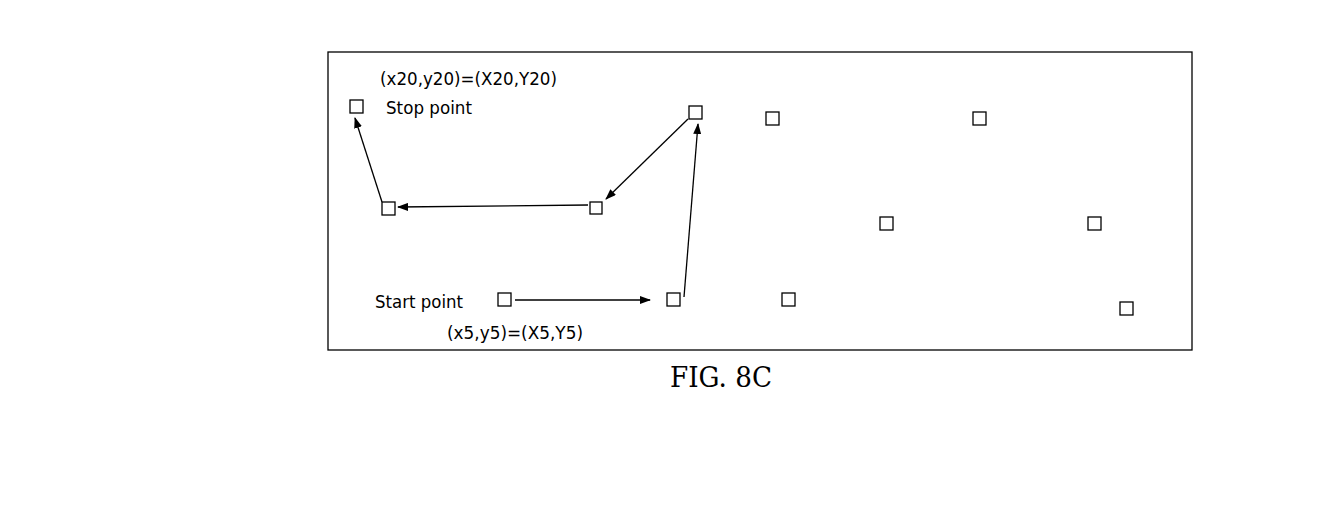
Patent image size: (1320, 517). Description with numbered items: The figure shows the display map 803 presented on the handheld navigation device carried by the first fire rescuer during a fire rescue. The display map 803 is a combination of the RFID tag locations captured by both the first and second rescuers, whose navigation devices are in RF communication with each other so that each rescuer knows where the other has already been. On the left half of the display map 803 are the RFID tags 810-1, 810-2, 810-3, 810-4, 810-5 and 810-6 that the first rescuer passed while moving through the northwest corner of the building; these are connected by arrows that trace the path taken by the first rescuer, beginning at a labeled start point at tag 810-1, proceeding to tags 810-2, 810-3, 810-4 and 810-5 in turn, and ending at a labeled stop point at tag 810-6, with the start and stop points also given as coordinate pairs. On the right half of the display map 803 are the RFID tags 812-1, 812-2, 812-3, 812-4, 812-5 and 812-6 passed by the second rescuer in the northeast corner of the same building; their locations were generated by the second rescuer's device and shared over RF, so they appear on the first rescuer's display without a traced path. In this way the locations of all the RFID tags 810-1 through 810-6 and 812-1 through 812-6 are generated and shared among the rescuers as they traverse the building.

The display map 803 is at (1209, 54).
The RFID tag 810-1 is at (498, 293).
The RFID tag 810-2 is at (679, 306).
The RFID tag 810-3 is at (689, 109).
The RFID tag 810-4 is at (595, 214).
The RFID tag 810-5 is at (394, 201).
The RFID tag 810-6 is at (350, 106).
The RFID tag 812-1 is at (794, 306).
The RFID tag 812-2 is at (892, 229).
The RFID tag 812-3 is at (778, 124).
The RFID tag 812-4 is at (986, 118).
The RFID tag 812-5 is at (1101, 222).
The RFID tag 812-6 is at (1133, 308).